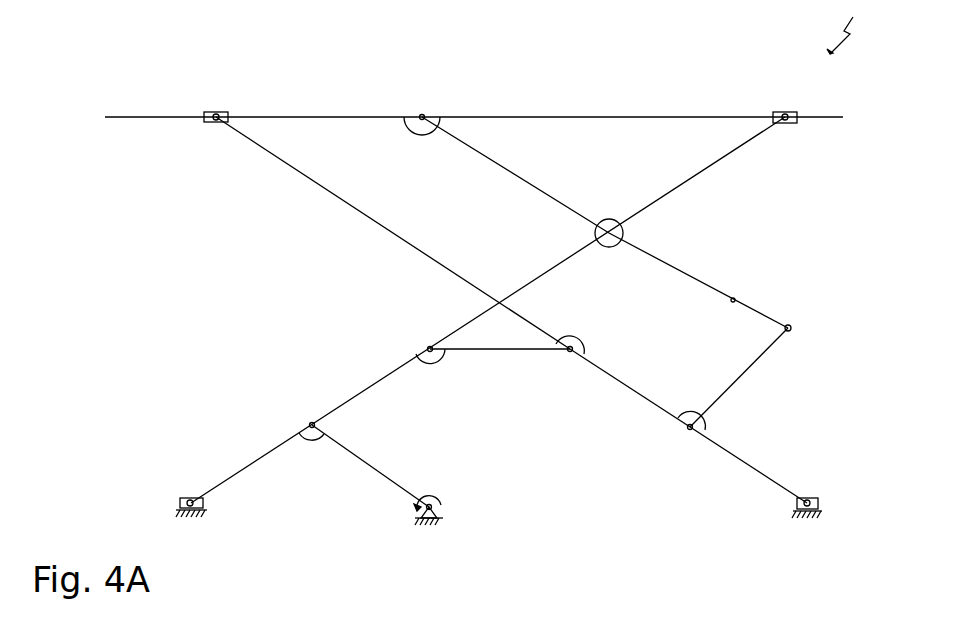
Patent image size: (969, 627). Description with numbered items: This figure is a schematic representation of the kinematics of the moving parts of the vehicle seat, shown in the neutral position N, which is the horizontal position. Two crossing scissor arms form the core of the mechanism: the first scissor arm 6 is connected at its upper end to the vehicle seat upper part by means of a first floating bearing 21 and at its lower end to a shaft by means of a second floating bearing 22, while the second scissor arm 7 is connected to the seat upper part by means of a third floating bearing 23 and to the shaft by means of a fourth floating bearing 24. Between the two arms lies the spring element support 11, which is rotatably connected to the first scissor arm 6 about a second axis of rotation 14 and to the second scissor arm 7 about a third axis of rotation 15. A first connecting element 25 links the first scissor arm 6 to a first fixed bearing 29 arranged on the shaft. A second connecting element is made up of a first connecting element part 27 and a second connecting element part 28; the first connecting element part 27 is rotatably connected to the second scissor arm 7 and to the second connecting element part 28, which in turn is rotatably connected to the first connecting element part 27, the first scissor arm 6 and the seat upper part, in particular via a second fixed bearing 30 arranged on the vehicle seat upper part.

The first scissor arm 6 is at (355, 394).
The second scissor arm 7 is at (633, 391).
The spring element support 11 is at (506, 351).
The second axis of rotation 14 is at (429, 346).
The third axis of rotation 15 is at (579, 338).
The first floating bearing 21 is at (785, 112).
The second floating bearing 22 is at (205, 505).
The third floating bearing 23 is at (218, 112).
The fourth floating bearing 24 is at (811, 497).
The first connecting element 25 is at (383, 474).
The first connecting element part 27 is at (736, 379).
The second connecting element part 28 is at (684, 271).
The first fixed bearing 29 is at (441, 514).
The second fixed bearing 30 is at (422, 115).
The neutral position N is at (846, 27).